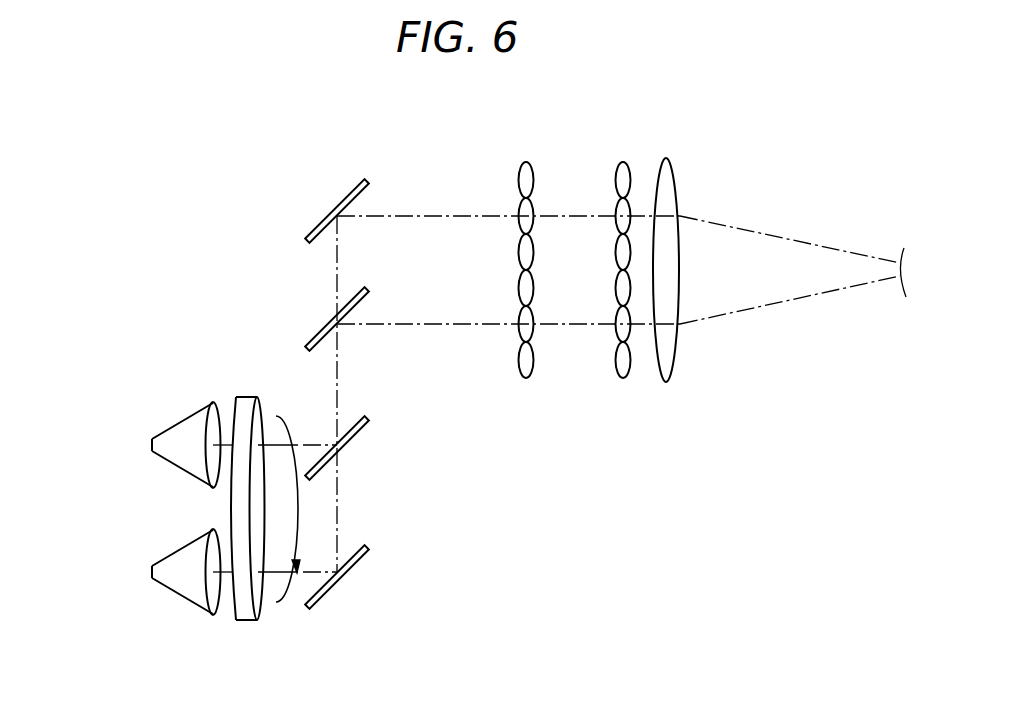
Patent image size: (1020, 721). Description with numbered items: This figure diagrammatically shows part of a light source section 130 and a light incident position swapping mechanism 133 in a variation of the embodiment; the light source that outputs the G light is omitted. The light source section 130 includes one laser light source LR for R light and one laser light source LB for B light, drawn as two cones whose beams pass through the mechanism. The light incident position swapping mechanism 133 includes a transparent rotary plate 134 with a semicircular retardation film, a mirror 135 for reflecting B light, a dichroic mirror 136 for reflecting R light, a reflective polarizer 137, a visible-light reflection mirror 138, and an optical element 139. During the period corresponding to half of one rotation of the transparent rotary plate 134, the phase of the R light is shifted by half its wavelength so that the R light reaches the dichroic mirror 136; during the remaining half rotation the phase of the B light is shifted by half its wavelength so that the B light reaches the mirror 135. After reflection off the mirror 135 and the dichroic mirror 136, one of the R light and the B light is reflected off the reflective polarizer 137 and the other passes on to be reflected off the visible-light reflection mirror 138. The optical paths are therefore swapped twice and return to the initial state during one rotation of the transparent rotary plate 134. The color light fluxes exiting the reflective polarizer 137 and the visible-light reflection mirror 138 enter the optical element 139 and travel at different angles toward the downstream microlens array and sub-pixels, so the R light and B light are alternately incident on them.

The light incident position swapping mechanism 133 is at (139, 208).
The light source section 130 is at (79, 472).
The laser light source for R light LR is at (177, 465).
The laser light source for B light LB is at (182, 546).
The transparent rotary plate with a semicircular retardation film 134 is at (248, 620).
The mirror for reflecting B light 135 is at (360, 563).
The dichroic mirror for reflecting R light 136 is at (360, 436).
The reflective polarizer 137 is at (311, 333).
The visible-light reflection mirror 138 is at (311, 225).
The optical element 139 is at (680, 158).